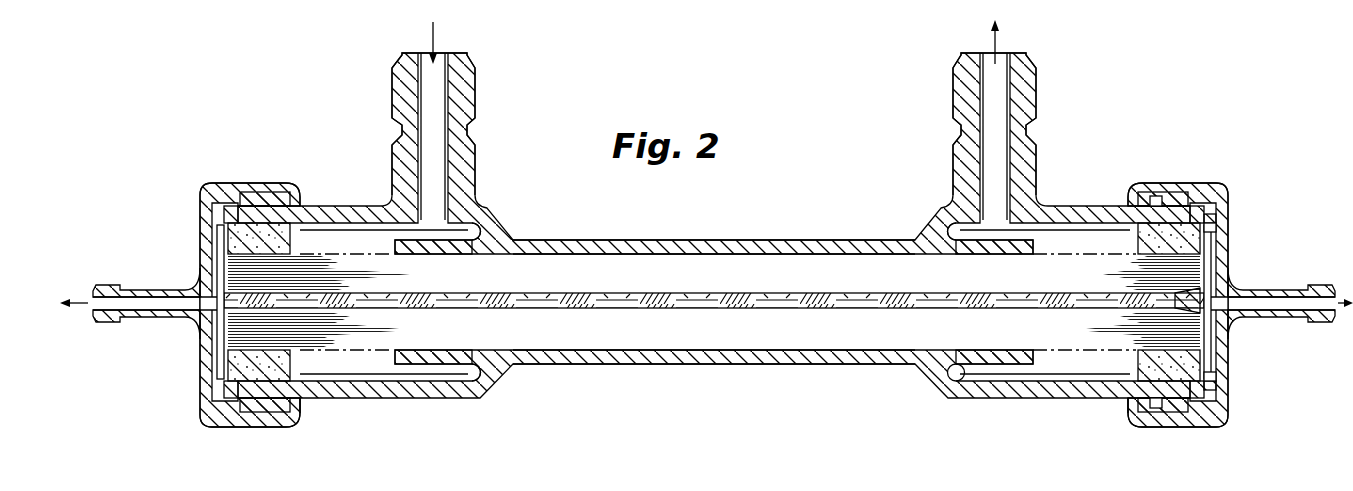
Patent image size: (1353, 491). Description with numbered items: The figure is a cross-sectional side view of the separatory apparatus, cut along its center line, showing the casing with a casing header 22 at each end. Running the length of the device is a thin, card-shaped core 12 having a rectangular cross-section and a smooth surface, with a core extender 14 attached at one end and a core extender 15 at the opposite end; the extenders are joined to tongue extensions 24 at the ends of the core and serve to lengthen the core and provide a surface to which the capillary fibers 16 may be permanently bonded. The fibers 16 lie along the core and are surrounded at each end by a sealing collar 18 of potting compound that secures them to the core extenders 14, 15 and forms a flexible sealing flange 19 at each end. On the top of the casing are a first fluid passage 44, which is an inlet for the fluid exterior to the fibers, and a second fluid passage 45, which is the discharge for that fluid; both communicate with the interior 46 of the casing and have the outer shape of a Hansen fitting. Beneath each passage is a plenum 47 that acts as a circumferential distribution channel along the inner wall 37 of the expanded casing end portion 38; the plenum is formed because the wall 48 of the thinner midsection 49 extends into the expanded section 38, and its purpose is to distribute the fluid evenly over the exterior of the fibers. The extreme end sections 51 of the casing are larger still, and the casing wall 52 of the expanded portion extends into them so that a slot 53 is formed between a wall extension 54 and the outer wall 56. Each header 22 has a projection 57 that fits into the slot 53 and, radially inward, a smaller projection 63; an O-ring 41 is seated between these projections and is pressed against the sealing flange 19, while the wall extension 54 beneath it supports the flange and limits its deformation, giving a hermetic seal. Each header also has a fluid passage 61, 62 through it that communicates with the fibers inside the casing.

The core 12 is at (720, 309).
The core extender 14 is at (1197, 295).
The core extender 15 is at (216, 348).
The capillary fibers 16 is at (300, 352).
The sealing collar 18 is at (262, 295).
The sealing flange 19 is at (240, 184).
The casing header 22 is at (206, 205).
The tongue extension 24 is at (285, 238).
The inner wall 37 is at (352, 372).
The expanded casing end portion 38 is at (412, 403).
The O-ring 41 is at (1217, 215).
The inlet fluid passage 44 is at (440, 156).
The discharge fluid passage 45 is at (995, 102).
The interior of the casing 46 is at (355, 236).
The plenum 47 is at (486, 228).
The wall of the midsection 48 is at (472, 352).
The midsection 49 is at (624, 374).
The extreme end section 51 is at (256, 440).
The casing wall 52 is at (1090, 210).
The slot 53 is at (1147, 405).
The wall extension 54 is at (276, 412).
The outer wall 56 is at (234, 427).
The projection 57 is at (1178, 220).
The header fluid passage 61 is at (1287, 284).
The header fluid passage 62 is at (133, 297).
The smaller projection 63 is at (1217, 232).